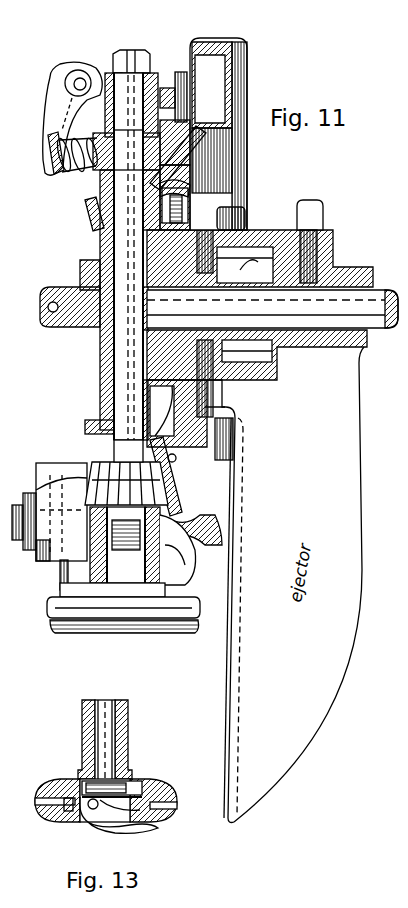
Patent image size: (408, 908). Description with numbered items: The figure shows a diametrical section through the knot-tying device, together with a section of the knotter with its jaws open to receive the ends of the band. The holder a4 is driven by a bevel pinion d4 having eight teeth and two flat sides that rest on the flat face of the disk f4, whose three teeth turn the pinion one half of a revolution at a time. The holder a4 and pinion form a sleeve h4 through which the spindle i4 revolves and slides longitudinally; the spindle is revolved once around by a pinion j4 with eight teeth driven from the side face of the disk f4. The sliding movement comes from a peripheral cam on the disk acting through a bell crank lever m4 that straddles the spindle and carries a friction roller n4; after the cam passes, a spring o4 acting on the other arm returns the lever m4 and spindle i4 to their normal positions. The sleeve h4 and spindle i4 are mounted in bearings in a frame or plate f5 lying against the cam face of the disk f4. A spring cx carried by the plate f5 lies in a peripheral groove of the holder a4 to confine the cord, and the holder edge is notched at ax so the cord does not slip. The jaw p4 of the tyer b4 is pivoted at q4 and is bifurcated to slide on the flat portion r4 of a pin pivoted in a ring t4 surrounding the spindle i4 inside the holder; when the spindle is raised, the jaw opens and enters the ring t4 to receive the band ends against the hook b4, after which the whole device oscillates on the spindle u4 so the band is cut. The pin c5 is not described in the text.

In FIG. 11, the bell crank lever m4 is at (96, 72).
In FIG. 11, the spring o4 is at (77, 165).
In FIG. 11, the pinion j4 is at (95, 206).
In FIG. 11, the friction roller n4 is at (173, 86).
In FIG. 11, the ring t4 is at (190, 126).
In FIG. 13, the ring t4 is at (150, 780).
In FIG. 11, the disk f4 is at (228, 147).
In FIG. 11, the frame or plate f5 is at (95, 268).
In FIG. 11, the spindle i4 is at (137, 238).
In FIG. 13, the spindle i4 is at (105, 740).
In FIG. 11, the spindle u4 is at (219, 307).
In FIG. 11, the bevel pinion d4 is at (95, 472).
In FIG. 11, the pivot pin c5 is at (182, 450).
In FIG. 11, the spring cx is at (136, 548).
In FIG. 11, the holder a4 is at (115, 608).
In FIG. 13, the holder a4 is at (168, 816).
In FIG. 13, the sleeve h4 is at (113, 739).
In FIG. 13, the notch ax is at (36, 803).
In FIG. 13, the jaw p4 is at (114, 797).
In FIG. 13, the pivot q4 is at (90, 811).
In FIG. 13, the flat portion of pin r4 is at (70, 812).
In FIG. 13, the tyer or hook b4 is at (119, 824).